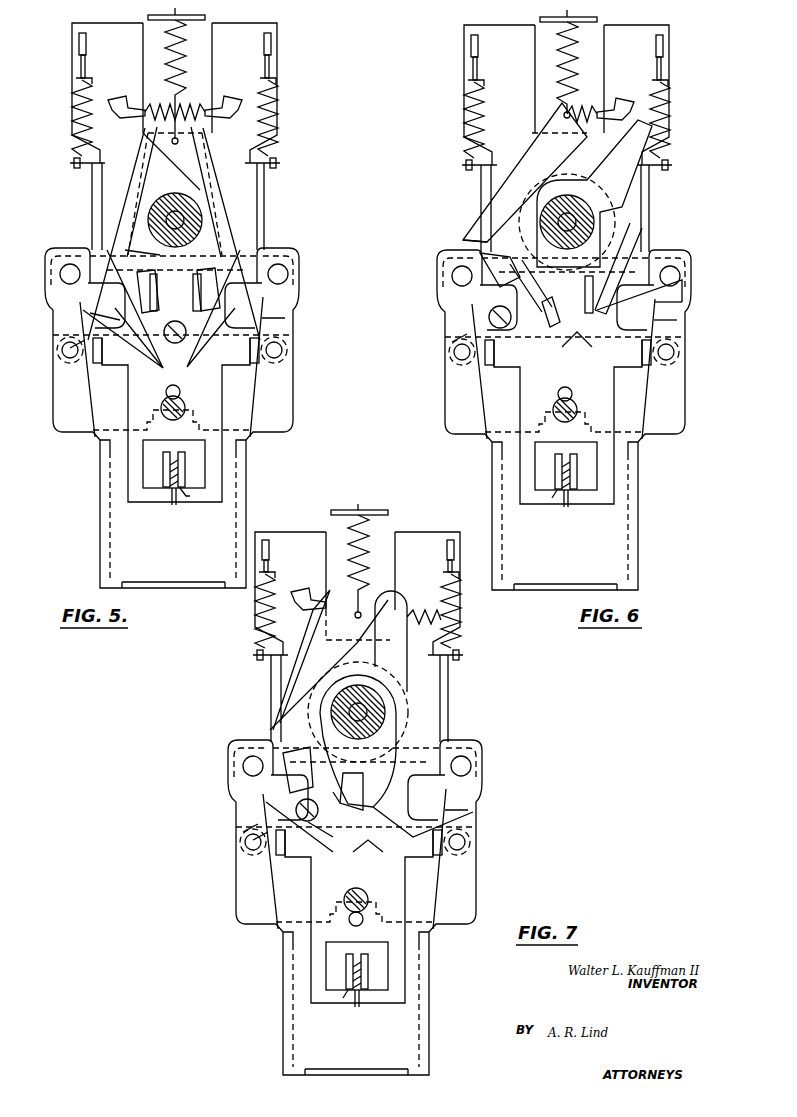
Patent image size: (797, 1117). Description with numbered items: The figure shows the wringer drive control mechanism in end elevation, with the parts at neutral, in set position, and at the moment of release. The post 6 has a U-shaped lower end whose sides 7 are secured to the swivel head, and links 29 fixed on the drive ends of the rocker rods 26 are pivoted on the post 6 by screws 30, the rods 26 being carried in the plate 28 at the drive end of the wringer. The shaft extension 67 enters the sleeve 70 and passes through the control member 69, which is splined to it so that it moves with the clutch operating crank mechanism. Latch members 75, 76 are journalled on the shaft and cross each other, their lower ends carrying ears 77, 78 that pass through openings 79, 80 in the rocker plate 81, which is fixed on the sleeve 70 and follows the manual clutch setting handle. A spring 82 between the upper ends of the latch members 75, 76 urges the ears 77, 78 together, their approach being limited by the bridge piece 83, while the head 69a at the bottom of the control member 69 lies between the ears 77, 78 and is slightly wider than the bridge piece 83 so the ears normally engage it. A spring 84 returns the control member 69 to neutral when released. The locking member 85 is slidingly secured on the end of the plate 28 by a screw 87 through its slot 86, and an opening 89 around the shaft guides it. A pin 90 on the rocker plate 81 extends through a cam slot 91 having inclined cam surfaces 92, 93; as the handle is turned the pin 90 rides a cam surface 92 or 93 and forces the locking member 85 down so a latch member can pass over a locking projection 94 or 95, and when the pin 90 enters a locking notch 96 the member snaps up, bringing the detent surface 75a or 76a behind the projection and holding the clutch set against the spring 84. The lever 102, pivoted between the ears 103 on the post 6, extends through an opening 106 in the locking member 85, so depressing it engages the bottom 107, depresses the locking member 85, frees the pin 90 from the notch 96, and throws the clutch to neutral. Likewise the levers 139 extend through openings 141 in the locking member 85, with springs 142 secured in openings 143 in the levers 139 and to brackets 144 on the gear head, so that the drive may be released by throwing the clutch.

In FIG. 5, the post 6 is at (118, 538).
In FIG. 6, the post 6 is at (548, 516).
In FIG. 7, the post 6 is at (342, 1003).
In FIG. 5, the sides 7 is at (242, 500).
In FIG. 6, the sides 7 is at (561, 518).
In FIG. 7, the sides 7 is at (365, 1005).
In FIG. 5, the rocker rods 26 is at (284, 350).
In FIG. 6, the rocker rods 26 is at (563, 359).
In FIG. 7, the rocker rods 26 is at (352, 845).
In FIG. 5, the plate 28 is at (58, 426).
In FIG. 6, the plate 28 is at (560, 346).
In FIG. 7, the plate 28 is at (344, 836).
In FIG. 5, the links 29 is at (288, 334).
In FIG. 6, the links 29 is at (565, 344).
In FIG. 7, the links 29 is at (354, 835).
In FIG. 5, the screws 30 is at (281, 272).
In FIG. 6, the screws 30 is at (563, 276).
In FIG. 7, the screws 30 is at (355, 762).
In FIG. 5, the shaft extension 67 is at (202, 215).
In FIG. 6, the shaft extension 67 is at (559, 219).
In FIG. 7, the shaft extension 67 is at (360, 712).
In FIG. 5, the control member 69 is at (197, 158).
In FIG. 6, the control member 69 is at (618, 250).
In FIG. 7, the control member 69 is at (352, 631).
In FIG. 5, the head 69a is at (90, 313).
In FIG. 6, the head 69a is at (518, 328).
In FIG. 7, the head 69a is at (320, 841).
In FIG. 5, the sleeve shaft 70 is at (195, 192).
In FIG. 6, the sleeve shaft 70 is at (594, 193).
In FIG. 7, the sleeve shaft 70 is at (358, 741).
In FIG. 5, the latch member 75 is at (262, 186).
In FIG. 6, the latch member 75 is at (576, 112).
In FIG. 7, the latch member 75 is at (369, 617).
In FIG. 6, the latching detent surface 75a is at (426, 340).
In FIG. 7, the latching detent surface 75a is at (213, 833).
In FIG. 5, the latch member 76 is at (102, 185).
In FIG. 6, the latch member 76 is at (524, 177).
In FIG. 7, the latch member 76 is at (291, 666).
In FIG. 6, the latching detent surface 76a is at (572, 353).
In FIG. 7, the latching detent surface 76a is at (372, 858).
In FIG. 5, the ear 77 is at (140, 290).
In FIG. 6, the ear 77 is at (500, 270).
In FIG. 7, the ear 77 is at (296, 765).
In FIG. 6, the ear 78 is at (551, 315).
In FIG. 7, the ear 78 is at (358, 794).
In FIG. 5, the opening 79 is at (118, 306).
In FIG. 6, the opening 79 is at (480, 274).
In FIG. 7, the opening 79 is at (252, 797).
In FIG. 5, the opening 80 is at (214, 290).
In FIG. 6, the opening 80 is at (552, 319).
In FIG. 7, the opening 80 is at (359, 786).
In FIG. 5, the rocker plate 81 is at (125, 250).
In FIG. 6, the rocker plate 81 is at (468, 220).
In FIG. 7, the rocker plate 81 is at (289, 686).
In FIG. 5, the spring 82 is at (200, 110).
In FIG. 6, the spring 82 is at (600, 100).
In FIG. 7, the spring 82 is at (408, 637).
In FIG. 5, the bridge piece 83 is at (106, 350).
In FIG. 6, the bridge piece 83 is at (458, 334).
In FIG. 7, the bridge piece 83 is at (241, 828).
In FIG. 5, the spring 84 is at (184, 52).
In FIG. 6, the spring 84 is at (586, 64).
In FIG. 7, the spring 84 is at (378, 561).
In FIG. 5, the locking member 85 is at (265, 225).
In FIG. 6, the locking member 85 is at (662, 208).
In FIG. 7, the locking member 85 is at (453, 698).
In FIG. 5, the slot 86 is at (180, 391).
In FIG. 6, the slot 86 is at (575, 389).
In FIG. 7, the slot 86 is at (368, 924).
In FIG. 5, the screw 87 is at (185, 408).
In FIG. 6, the screw 87 is at (576, 410).
In FIG. 7, the screw 87 is at (368, 900).
In FIG. 5, the opening 89 is at (150, 160).
In FIG. 6, the opening 89 is at (573, 184).
In FIG. 7, the opening 89 is at (355, 675).
In FIG. 5, the pin 90 is at (172, 344).
In FIG. 6, the pin 90 is at (459, 318).
In FIG. 7, the pin 90 is at (305, 829).
In FIG. 5, the cam slot 91 is at (258, 308).
In FIG. 6, the cam slot 91 is at (687, 300).
In FIG. 7, the cam slot 91 is at (463, 797).
In FIG. 5, the cam surface 92 is at (130, 362).
In FIG. 7, the cam surface 92 is at (299, 846).
In FIG. 5, the cam surface 93 is at (213, 308).
In FIG. 6, the cam surface 93 is at (638, 321).
In FIG. 7, the cam surface 93 is at (423, 833).
In FIG. 5, the locking projection 94 is at (90, 370).
In FIG. 6, the locking projection 94 is at (532, 362).
In FIG. 7, the locking projection 94 is at (245, 861).
In FIG. 5, the locking projection 95 is at (252, 370).
In FIG. 6, the locking projection 95 is at (574, 401).
In FIG. 7, the locking projection 95 is at (365, 896).
In FIG. 5, the locking notches 96 is at (70, 348).
In FIG. 6, the locking notches 96 is at (687, 313).
In FIG. 7, the locking notches 96 is at (362, 837).
In FIG. 5, the lever 102 is at (173, 505).
In FIG. 6, the lever 102 is at (570, 504).
In FIG. 7, the lever 102 is at (364, 998).
In FIG. 5, the ears 103 is at (184, 462).
In FIG. 6, the ears 103 is at (571, 498).
In FIG. 7, the ears 103 is at (358, 994).
In FIG. 5, the opening 106 is at (145, 470).
In FIG. 6, the opening 106 is at (511, 476).
In FIG. 7, the opening 106 is at (396, 966).
In FIG. 5, the bottom 107 is at (186, 496).
In FIG. 6, the bottom 107 is at (531, 508).
In FIG. 7, the bottom 107 is at (322, 1005).
In FIG. 5, the levers 139 is at (275, 68).
In FIG. 6, the levers 139 is at (571, 64).
In FIG. 7, the levers 139 is at (358, 552).
In FIG. 5, the openings 141 is at (272, 40).
In FIG. 6, the openings 141 is at (568, 44).
In FIG. 7, the openings 141 is at (358, 536).
In FIG. 5, the springs 142 is at (283, 128).
In FIG. 6, the springs 142 is at (567, 120).
In FIG. 7, the springs 142 is at (358, 611).
In FIG. 5, the openings 143 is at (278, 77).
In FIG. 6, the openings 143 is at (572, 76).
In FIG. 7, the openings 143 is at (359, 572).
In FIG. 5, the brackets 144 is at (277, 163).
In FIG. 6, the brackets 144 is at (567, 165).
In FIG. 7, the brackets 144 is at (358, 655).